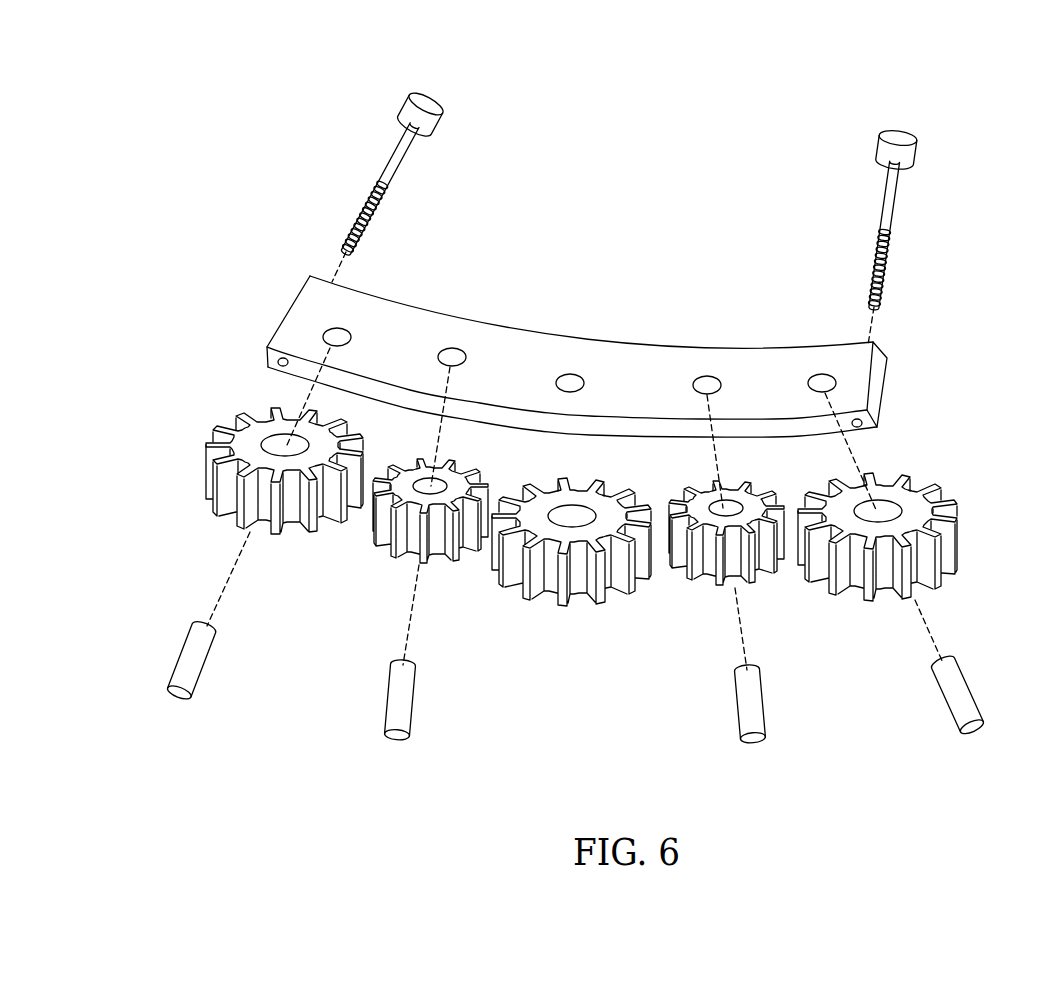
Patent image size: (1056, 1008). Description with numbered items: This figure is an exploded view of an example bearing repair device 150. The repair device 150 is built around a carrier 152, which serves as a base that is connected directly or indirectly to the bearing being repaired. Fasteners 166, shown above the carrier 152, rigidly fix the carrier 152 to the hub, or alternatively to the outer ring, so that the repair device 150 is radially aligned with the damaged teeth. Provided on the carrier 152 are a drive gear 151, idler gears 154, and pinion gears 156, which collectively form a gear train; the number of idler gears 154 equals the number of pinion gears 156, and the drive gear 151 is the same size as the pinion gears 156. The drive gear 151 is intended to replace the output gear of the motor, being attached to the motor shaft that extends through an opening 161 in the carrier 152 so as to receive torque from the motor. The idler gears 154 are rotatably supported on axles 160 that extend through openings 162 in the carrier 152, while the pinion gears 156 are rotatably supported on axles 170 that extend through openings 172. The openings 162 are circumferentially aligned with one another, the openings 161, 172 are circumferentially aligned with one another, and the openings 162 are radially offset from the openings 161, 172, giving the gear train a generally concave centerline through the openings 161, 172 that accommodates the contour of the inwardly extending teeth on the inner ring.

The repair device 150 is at (207, 93).
The drive gear 151 is at (620, 490).
The carrier 152 is at (655, 378).
The idler gear 154 is at (400, 468).
The pinion gear 156 is at (238, 415).
The axle 160 is at (415, 708).
The opening 161 is at (572, 368).
The opening 162 is at (472, 340).
The fastener 166 is at (398, 182).
The axle 170 is at (212, 665).
The opening 172 is at (366, 318).